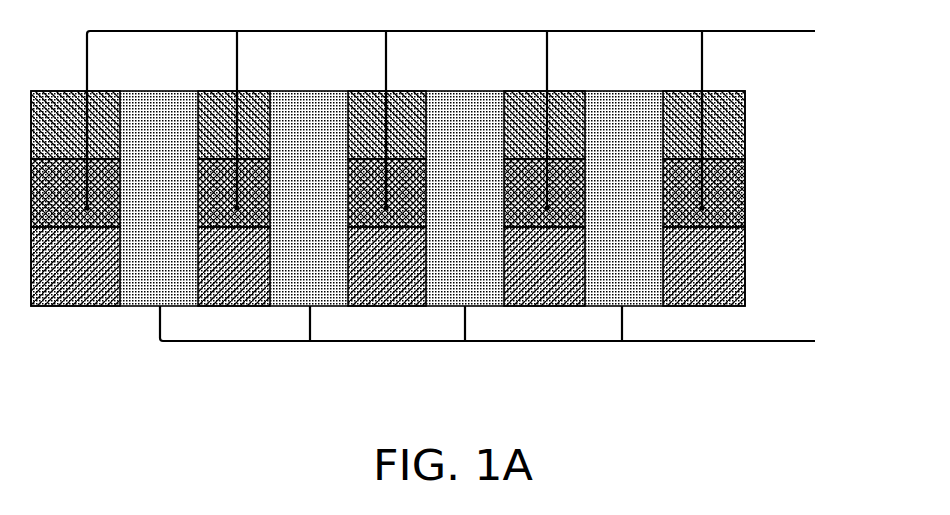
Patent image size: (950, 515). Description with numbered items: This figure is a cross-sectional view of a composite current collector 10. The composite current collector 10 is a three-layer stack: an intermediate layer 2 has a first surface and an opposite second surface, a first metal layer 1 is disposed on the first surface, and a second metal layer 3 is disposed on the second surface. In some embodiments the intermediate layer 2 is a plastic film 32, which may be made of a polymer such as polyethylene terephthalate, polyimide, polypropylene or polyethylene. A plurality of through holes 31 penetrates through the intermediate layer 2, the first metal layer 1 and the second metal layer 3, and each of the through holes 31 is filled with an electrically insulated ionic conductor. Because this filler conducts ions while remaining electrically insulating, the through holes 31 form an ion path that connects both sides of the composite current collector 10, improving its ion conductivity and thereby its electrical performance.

The first metal layer 1 is at (745, 91).
The intermediate layer 2 is at (745, 159).
The second metal layer 3 is at (745, 227).
The composite current collector 10 is at (429, 249).
The through holes 31 is at (818, 341).
The plastic film 32 is at (818, 31).